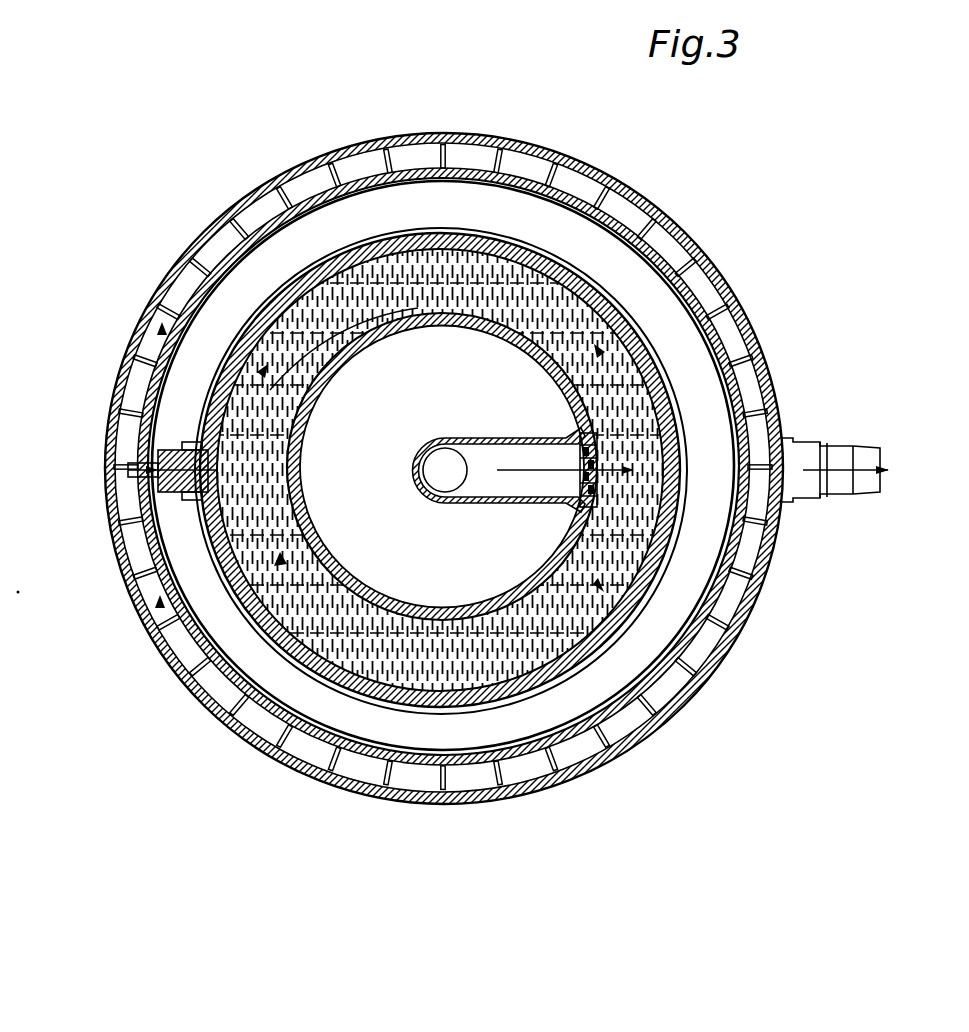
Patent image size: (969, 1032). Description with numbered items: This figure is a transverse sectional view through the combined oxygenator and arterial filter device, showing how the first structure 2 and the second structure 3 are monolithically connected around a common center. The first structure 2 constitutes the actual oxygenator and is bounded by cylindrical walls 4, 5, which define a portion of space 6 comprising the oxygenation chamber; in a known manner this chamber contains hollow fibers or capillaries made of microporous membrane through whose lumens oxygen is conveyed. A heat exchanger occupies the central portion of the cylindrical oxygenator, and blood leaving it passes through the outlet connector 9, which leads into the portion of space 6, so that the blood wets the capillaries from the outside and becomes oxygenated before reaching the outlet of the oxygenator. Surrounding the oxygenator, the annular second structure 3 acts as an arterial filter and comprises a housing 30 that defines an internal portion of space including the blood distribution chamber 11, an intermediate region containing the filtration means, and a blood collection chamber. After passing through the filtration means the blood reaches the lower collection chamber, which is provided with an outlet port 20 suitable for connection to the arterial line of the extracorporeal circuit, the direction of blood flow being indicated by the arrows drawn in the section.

The first structure 2 is at (555, 692).
The second structure 3 is at (743, 284).
The cylindrical wall 4 is at (233, 594).
The cylindrical wall 5 is at (303, 487).
The portion of space 6 is at (432, 653).
The outlet connector of heat exchanger 9 is at (522, 458).
The blood distribution chamber 11 is at (221, 249).
The outlet port 20 is at (838, 485).
The housing 30 is at (158, 446).